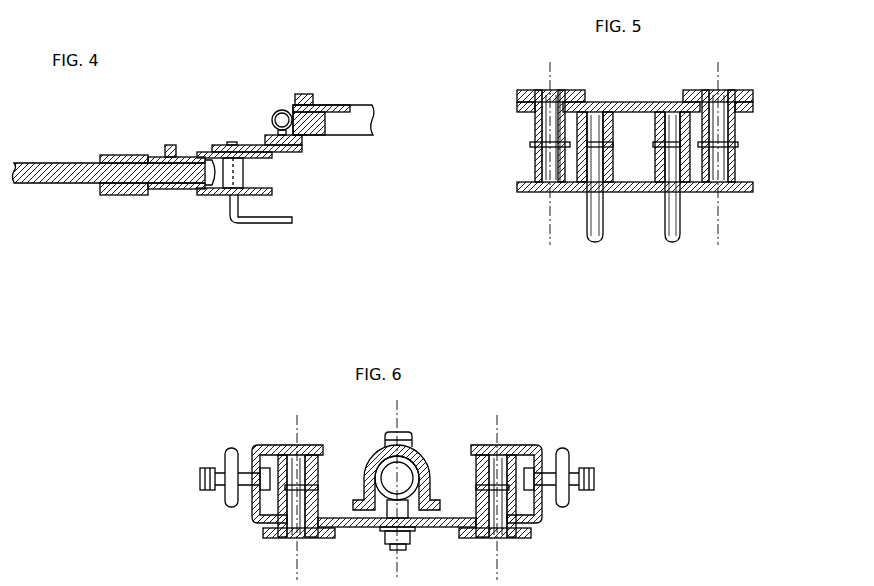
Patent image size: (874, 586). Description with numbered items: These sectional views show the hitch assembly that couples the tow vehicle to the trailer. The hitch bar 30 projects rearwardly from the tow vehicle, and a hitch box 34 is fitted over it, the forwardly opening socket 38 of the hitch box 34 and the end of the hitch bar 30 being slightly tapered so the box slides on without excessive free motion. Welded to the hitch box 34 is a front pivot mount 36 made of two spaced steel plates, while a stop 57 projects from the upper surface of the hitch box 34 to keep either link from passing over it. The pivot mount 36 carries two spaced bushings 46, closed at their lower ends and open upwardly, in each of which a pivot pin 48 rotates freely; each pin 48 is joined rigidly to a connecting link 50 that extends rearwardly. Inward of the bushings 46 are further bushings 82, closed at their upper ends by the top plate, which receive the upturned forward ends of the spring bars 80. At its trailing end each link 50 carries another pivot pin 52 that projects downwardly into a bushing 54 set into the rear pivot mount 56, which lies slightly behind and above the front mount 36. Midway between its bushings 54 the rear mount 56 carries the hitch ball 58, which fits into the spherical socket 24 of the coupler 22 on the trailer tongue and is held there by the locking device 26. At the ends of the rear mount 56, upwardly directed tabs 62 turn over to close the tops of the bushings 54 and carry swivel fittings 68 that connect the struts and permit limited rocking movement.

In FIG. 4, the coupler 22 is at (342, 135).
In FIG. 6, the coupler 22 is at (427, 490).
In FIG. 4, the socket 24 is at (271, 117).
In FIG. 6, the socket 24 is at (383, 473).
In FIG. 4, the locking device 26 is at (318, 117).
In FIG. 6, the locking device 26 is at (403, 432).
In FIG. 4, the hitch bar 30 is at (40, 193).
In FIG. 4, the hitch box 34 is at (118, 192).
In FIG. 4, the pivot mount 36 is at (203, 153).
In FIG. 5, the pivot mount 36 is at (538, 195).
In FIG. 4, the socket 38 is at (115, 167).
In FIG. 5, the bushings 46 is at (535, 127).
In FIG. 5, the pivot pin 48 is at (543, 162).
In FIG. 4, the connecting link 50 is at (290, 158).
In FIG. 5, the connecting link 50 is at (532, 95).
In FIG. 6, the connecting link 50 is at (272, 540).
In FIG. 6, the pivot pin 52 is at (300, 530).
In FIG. 6, the bushings 54 is at (318, 470).
In FIG. 6, the rear pivot mount 56 is at (440, 529).
In FIG. 4, the stop 57 is at (165, 148).
In FIG. 4, the hitch ball 58 is at (281, 112).
In FIG. 6, the hitch ball 58 is at (403, 473).
In FIG. 6, the tabs 62 is at (255, 507).
In FIG. 6, the swivel fittings 68 is at (225, 462).
In FIG. 4, the spring bars 80 is at (262, 224).
In FIG. 5, the spring bars 80 is at (672, 238).
In FIG. 5, the bushings 82 is at (655, 137).